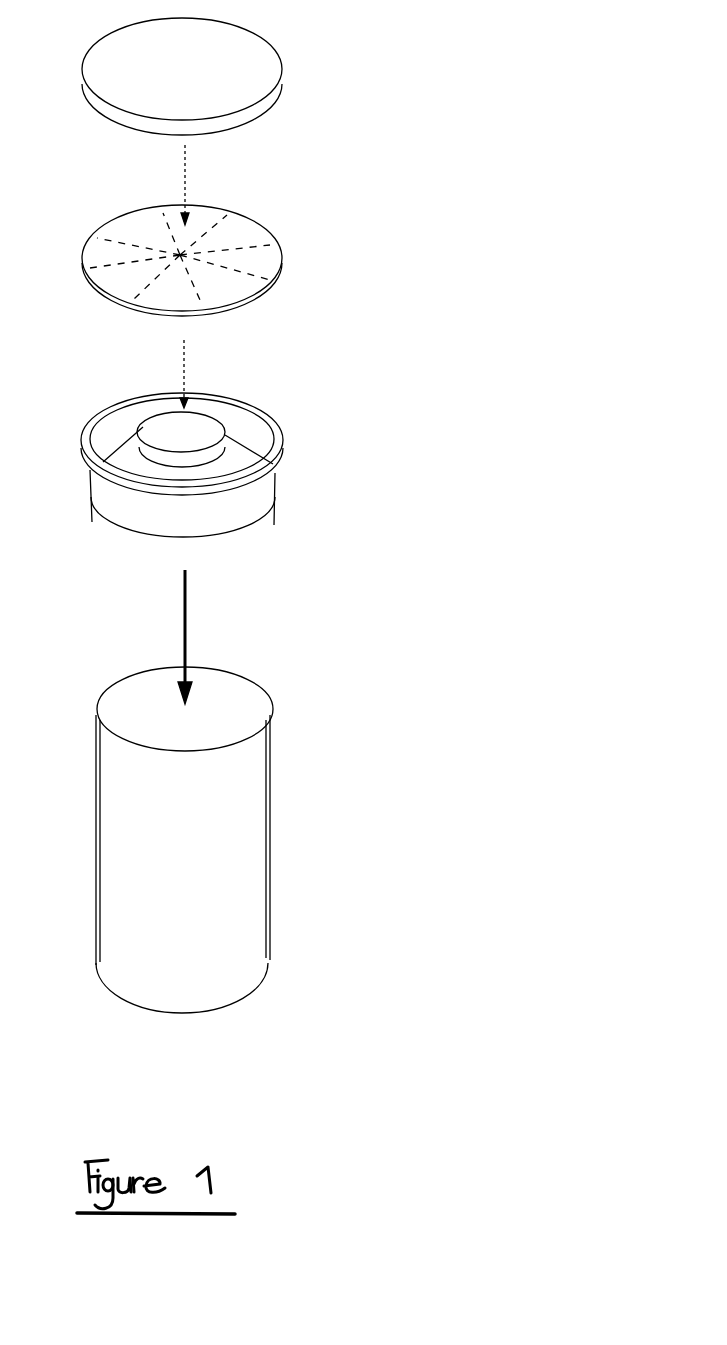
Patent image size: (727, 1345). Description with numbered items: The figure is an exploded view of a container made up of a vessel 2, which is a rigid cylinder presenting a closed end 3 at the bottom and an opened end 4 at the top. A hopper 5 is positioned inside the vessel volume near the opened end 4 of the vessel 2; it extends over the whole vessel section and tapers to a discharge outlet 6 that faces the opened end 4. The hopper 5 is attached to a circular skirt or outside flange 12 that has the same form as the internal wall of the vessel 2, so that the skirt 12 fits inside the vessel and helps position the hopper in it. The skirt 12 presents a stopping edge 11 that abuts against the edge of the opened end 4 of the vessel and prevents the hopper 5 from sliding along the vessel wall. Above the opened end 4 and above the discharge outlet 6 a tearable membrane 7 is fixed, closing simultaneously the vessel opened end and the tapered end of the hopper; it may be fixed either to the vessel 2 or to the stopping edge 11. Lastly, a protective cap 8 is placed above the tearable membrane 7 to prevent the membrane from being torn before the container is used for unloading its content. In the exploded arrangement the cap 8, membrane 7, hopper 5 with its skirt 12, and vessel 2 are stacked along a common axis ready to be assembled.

The vessel 2 is at (230, 880).
The closed end 3 is at (183, 1013).
The opened end 4 is at (225, 708).
The hopper 5 is at (253, 421).
The discharge outlet 6 is at (207, 420).
The tearable membrane 7 is at (257, 230).
The protective cap 8 is at (260, 42).
The stopping edge 11 is at (277, 450).
The circular skirt 12 is at (248, 503).